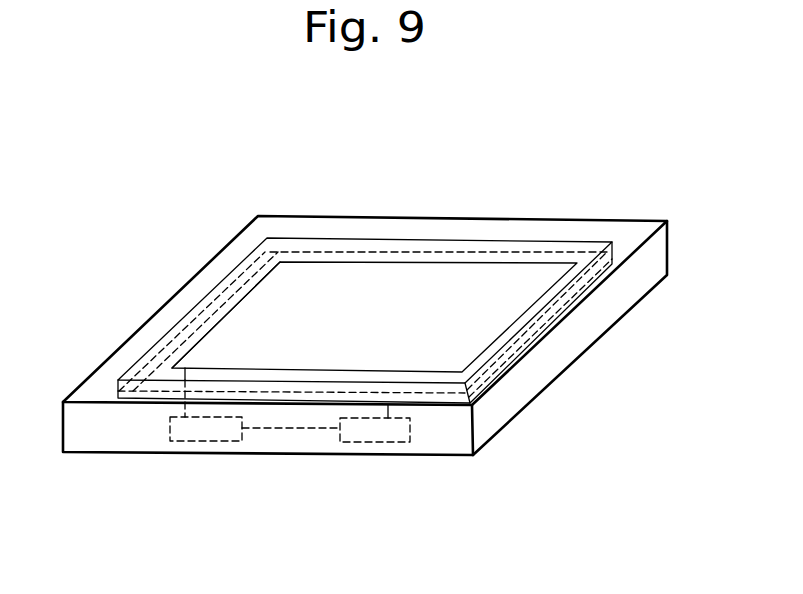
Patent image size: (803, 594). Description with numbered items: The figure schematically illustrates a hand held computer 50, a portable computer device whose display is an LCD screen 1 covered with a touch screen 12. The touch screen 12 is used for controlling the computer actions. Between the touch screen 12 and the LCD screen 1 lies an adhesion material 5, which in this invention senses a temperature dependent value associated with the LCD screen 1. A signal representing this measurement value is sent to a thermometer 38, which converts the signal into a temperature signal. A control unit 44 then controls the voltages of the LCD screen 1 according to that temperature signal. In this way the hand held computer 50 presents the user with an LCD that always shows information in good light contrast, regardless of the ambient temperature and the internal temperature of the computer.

The hand held computer 50 is at (617, 188).
The touch screen 12 is at (485, 240).
The LCD screen 1 is at (361, 262).
The adhesion material 5 is at (230, 308).
The thermometer 38 is at (205, 437).
The control unit 44 is at (375, 437).